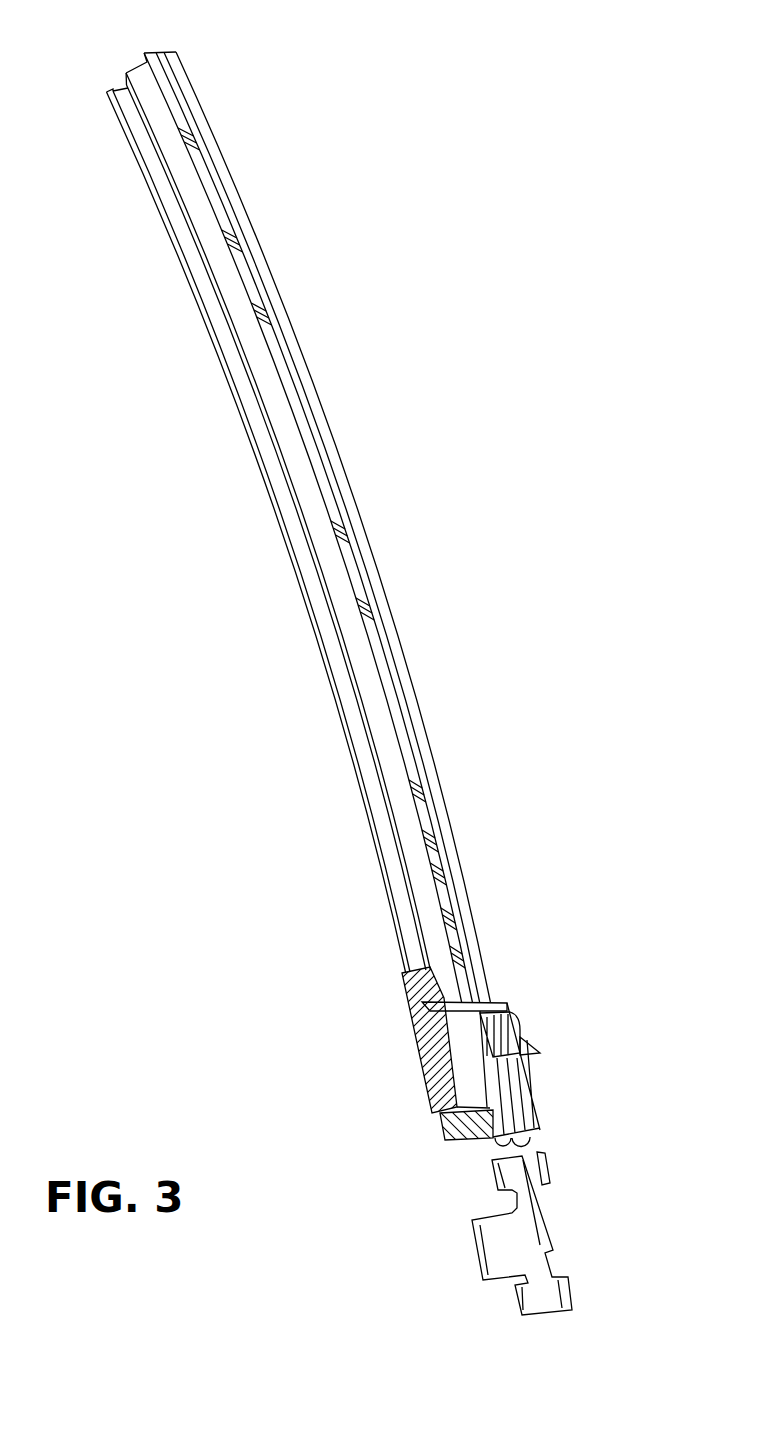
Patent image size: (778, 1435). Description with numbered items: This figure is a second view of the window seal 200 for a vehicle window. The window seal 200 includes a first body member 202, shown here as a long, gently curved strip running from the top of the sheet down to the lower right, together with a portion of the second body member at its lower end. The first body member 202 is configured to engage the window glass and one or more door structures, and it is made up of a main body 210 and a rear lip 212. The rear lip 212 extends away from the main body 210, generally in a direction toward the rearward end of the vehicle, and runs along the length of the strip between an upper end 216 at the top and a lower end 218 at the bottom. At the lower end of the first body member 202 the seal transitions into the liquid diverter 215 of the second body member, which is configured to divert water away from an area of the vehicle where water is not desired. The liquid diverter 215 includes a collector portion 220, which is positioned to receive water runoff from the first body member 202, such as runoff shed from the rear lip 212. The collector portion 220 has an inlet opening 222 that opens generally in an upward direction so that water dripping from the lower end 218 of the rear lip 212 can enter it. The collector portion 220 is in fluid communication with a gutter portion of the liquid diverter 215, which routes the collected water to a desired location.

The window seal 200 is at (512, 202).
The first body member 202 is at (424, 518).
The main body 210 is at (264, 365).
The rear lip 212 is at (300, 395).
The liquid diverter 215 is at (557, 1090).
The upper end 216 is at (152, 50).
The lower end 218 is at (476, 980).
The collector portion 220 is at (533, 1008).
The inlet opening 222 is at (442, 987).